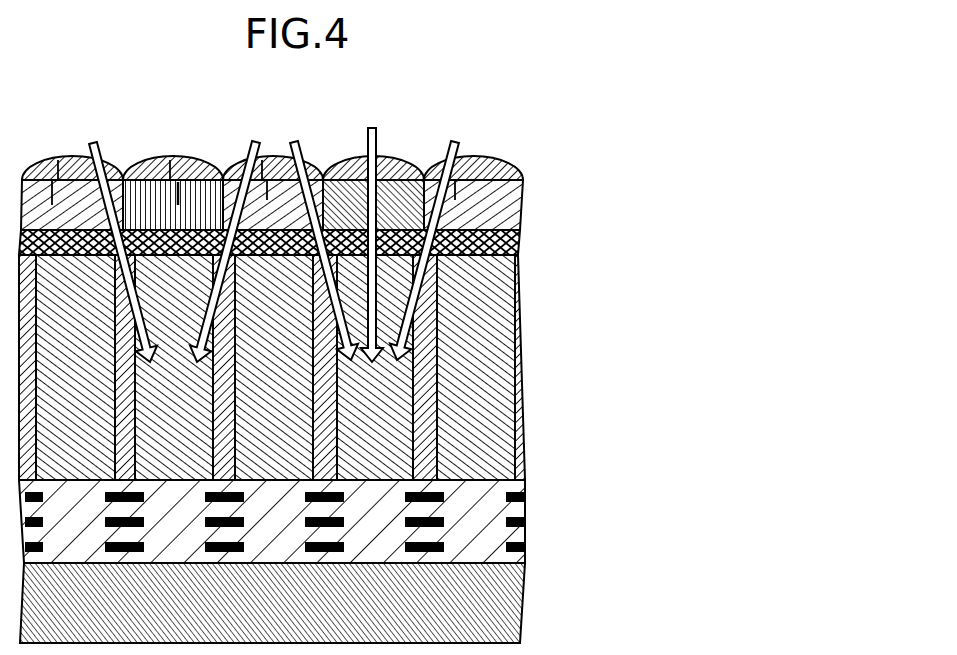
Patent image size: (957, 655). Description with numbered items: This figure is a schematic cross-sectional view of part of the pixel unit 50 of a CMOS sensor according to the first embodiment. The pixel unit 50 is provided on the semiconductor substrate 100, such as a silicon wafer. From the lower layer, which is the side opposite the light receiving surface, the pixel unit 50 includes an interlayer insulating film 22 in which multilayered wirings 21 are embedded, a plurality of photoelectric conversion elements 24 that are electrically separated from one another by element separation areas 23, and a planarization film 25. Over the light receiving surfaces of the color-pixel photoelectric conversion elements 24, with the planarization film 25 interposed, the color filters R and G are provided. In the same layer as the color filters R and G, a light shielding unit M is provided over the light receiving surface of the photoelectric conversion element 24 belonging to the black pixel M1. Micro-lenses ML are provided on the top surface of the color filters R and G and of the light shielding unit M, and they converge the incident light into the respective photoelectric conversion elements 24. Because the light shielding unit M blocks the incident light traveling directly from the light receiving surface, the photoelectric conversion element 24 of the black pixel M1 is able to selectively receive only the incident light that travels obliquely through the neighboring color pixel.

The semiconductor substrate 100 is at (512, 603).
The multilayered wirings 21 is at (522, 521).
The interlayer insulating film 22 is at (521, 497).
The element separation area 23 is at (524, 428).
The photoelectric conversion element 24 is at (505, 299).
The planarization film 25 is at (510, 245).
The color filter G is at (63, 160).
The light shielding unit M is at (190, 160).
The color filter R is at (412, 158).
The micro-lens ML is at (514, 162).
The black pixel M1 is at (154, 143).
The pixel unit 50 is at (349, 108).